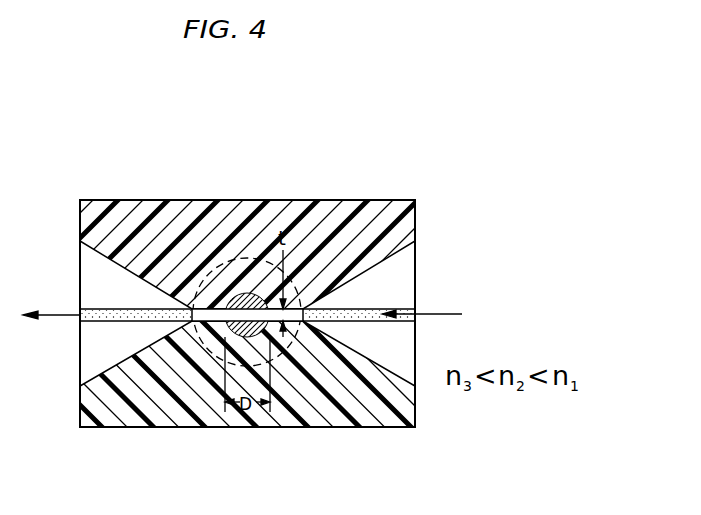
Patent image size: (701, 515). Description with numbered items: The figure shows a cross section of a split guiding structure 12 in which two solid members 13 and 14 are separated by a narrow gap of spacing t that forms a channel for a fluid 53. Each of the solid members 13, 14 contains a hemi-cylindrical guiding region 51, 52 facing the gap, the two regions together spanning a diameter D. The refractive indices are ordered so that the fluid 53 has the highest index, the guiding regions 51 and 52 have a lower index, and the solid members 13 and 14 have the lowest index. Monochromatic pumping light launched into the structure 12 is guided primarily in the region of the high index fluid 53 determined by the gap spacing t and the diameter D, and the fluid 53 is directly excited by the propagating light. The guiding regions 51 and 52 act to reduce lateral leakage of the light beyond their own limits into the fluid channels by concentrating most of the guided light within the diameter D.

The split guiding structure 12 is at (188, 504).
The solid member 13 is at (101, 207).
The solid member 14 is at (101, 412).
The hemi-cylindrical guiding region 51 is at (247, 293).
The hemi-cylindrical guiding region 52 is at (232, 345).
The fluid 53 is at (440, 314).